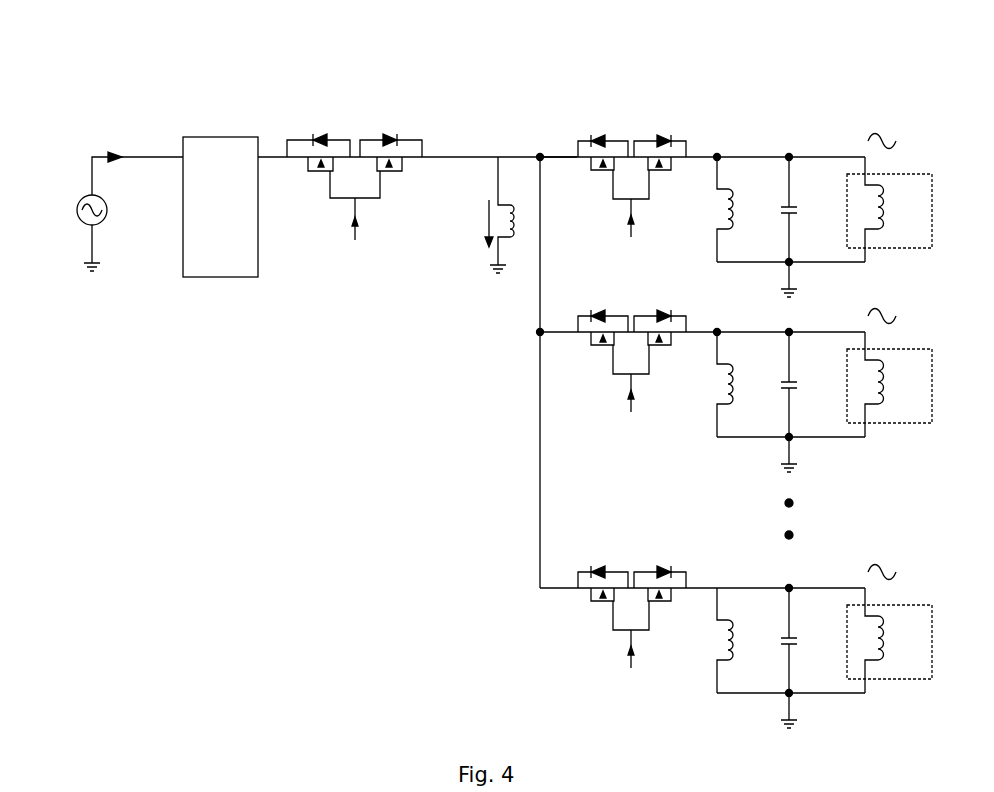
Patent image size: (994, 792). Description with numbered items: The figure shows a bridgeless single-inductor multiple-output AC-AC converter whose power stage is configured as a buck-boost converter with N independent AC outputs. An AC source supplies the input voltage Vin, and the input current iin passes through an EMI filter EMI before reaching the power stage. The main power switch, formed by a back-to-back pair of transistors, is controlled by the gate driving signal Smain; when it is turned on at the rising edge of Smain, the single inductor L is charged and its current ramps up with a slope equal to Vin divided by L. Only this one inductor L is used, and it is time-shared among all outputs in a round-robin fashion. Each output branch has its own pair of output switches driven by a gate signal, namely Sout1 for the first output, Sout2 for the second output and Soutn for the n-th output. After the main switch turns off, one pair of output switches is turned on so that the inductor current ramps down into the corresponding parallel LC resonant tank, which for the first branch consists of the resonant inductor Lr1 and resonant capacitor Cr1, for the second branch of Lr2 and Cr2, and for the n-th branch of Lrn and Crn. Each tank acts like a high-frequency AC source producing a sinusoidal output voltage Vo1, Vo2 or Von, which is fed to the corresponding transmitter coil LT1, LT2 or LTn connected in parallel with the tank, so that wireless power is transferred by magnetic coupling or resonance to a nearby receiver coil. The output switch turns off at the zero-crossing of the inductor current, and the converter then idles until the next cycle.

The input voltage Vin is at (107, 214).
The input current iin is at (113, 143).
The EMI filter EMI is at (220, 207).
The gate driving signal of the main power switch Smain is at (354, 189).
The inductor L is at (500, 215).
The gate driving signal of the first output switch Sout1 is at (631, 189).
The resonant inductor Lr1 is at (741, 209).
The resonant capacitor Cr1 is at (805, 226).
The transmitter coil LT1 is at (890, 215).
The output voltage Vo1 is at (853, 140).
The gate driving signal of the second output switch Sout2 is at (631, 364).
The resonant inductor Lr2 is at (741, 384).
The resonant capacitor Cr2 is at (805, 401).
The transmitter coil LT2 is at (890, 390).
The output voltage Vo2 is at (853, 315).
The gate driving signal of the n-th output switch Soutn is at (631, 620).
The resonant inductor Lrn is at (741, 640).
The resonant capacitor Crn is at (805, 657).
The transmitter coil LTn is at (889, 646).
The output voltage Von is at (853, 571).